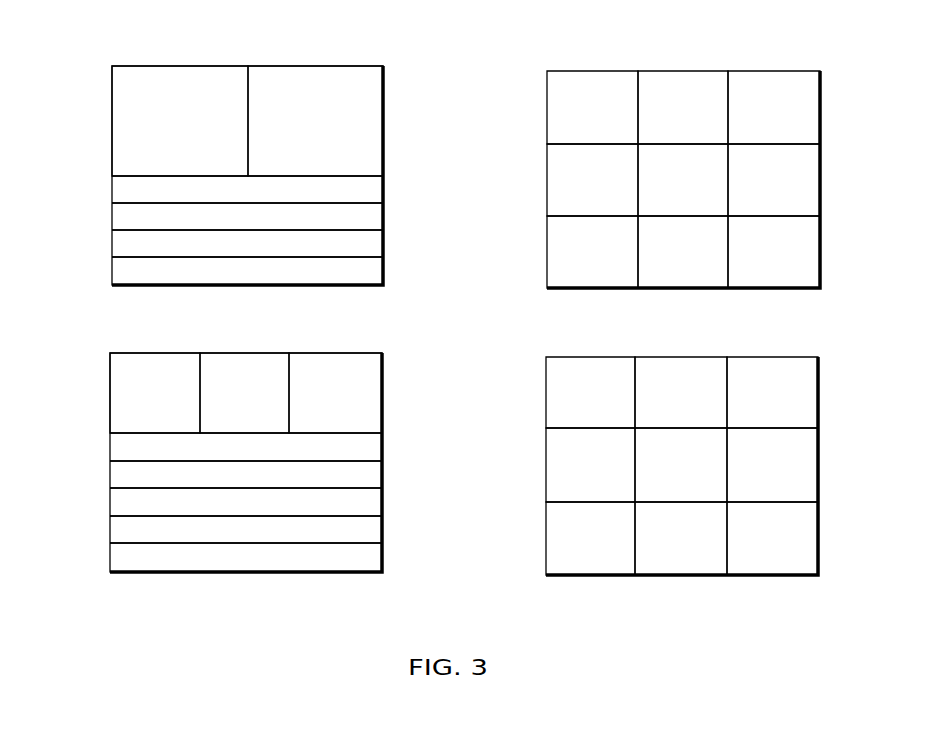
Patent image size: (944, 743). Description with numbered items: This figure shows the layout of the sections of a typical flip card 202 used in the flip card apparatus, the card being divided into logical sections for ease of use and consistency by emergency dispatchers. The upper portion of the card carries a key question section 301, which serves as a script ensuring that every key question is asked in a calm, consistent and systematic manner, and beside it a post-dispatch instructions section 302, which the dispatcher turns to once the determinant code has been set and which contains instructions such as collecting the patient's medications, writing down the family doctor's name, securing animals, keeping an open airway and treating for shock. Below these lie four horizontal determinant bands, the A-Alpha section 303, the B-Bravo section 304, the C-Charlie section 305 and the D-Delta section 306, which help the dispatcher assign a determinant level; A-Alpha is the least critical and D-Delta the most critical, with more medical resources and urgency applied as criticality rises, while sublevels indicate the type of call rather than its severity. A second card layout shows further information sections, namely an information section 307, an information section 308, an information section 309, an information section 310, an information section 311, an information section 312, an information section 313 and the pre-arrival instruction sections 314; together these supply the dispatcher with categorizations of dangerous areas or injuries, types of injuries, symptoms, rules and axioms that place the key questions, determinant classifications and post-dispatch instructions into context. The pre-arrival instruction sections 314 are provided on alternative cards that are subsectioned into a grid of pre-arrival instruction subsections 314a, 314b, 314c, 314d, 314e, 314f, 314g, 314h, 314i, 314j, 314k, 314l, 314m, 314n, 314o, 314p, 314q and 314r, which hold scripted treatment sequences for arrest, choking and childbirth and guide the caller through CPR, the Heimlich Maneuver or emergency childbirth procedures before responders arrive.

The flip card 202 is at (112, 117).
The key question section 301 is at (193, 78).
The post-dispatch instructions section 302 is at (368, 120).
The A-Alpha section 303 is at (360, 190).
The B-Bravo section 304 is at (360, 216).
The C-Charlie section 305 is at (366, 243).
The D-Delta section 306 is at (368, 274).
The information section 307 is at (360, 398).
The information section 308 is at (250, 358).
The information section 309 is at (132, 385).
The information section 310 is at (355, 447).
The information section 311 is at (355, 476).
The information section 312 is at (357, 502).
The information section 313 is at (362, 530).
The pre-arrival instruction sections 314 is at (365, 562).
The pre-arrival instruction subsection 314a is at (575, 99).
The pre-arrival instruction subsection 314b is at (572, 178).
The pre-arrival instruction subsection 314c is at (570, 248).
The pre-arrival instruction subsection 314d is at (664, 77).
The pre-arrival instruction subsection 314e is at (693, 152).
The pre-arrival instruction subsection 314f is at (810, 103).
The pre-arrival instruction subsection 314g is at (803, 174).
The pre-arrival instruction subsection 314h is at (798, 240).
The pre-arrival instruction subsection 314i is at (682, 268).
The pre-arrival instruction subsection 314j is at (570, 389).
The pre-arrival instruction subsection 314k is at (570, 468).
The pre-arrival instruction subsection 314l is at (567, 540).
The pre-arrival instruction subsection 314m is at (662, 365).
The pre-arrival instruction subsection 314n is at (691, 440).
The pre-arrival instruction subsection 314o is at (808, 393).
The pre-arrival instruction subsection 314p is at (800, 465).
The pre-arrival instruction subsection 314q is at (795, 530).
The pre-arrival instruction subsection 314r is at (680, 562).